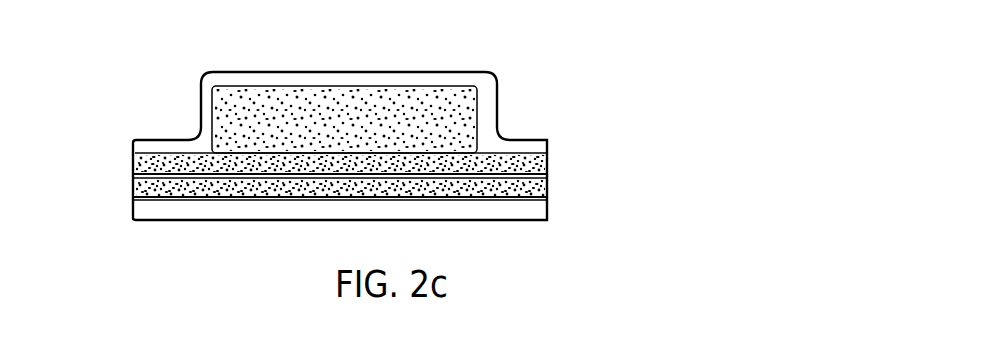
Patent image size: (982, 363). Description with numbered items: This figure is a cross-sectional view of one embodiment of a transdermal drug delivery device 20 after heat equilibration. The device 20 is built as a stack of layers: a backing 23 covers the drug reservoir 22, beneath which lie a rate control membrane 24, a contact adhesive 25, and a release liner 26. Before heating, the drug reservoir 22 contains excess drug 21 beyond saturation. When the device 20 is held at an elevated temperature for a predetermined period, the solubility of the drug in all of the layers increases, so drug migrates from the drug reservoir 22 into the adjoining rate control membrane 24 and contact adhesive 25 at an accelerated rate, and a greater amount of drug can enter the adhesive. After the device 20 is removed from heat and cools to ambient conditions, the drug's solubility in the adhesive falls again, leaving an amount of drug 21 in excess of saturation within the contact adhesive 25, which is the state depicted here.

The drug delivery device 20 is at (527, 75).
The excess drug 21 is at (457, 118).
The drug reservoir 22 is at (387, 105).
The backing 23 is at (522, 147).
The rate control membrane 24 is at (528, 167).
The contact adhesive 25 is at (527, 185).
The release liner 26 is at (513, 207).